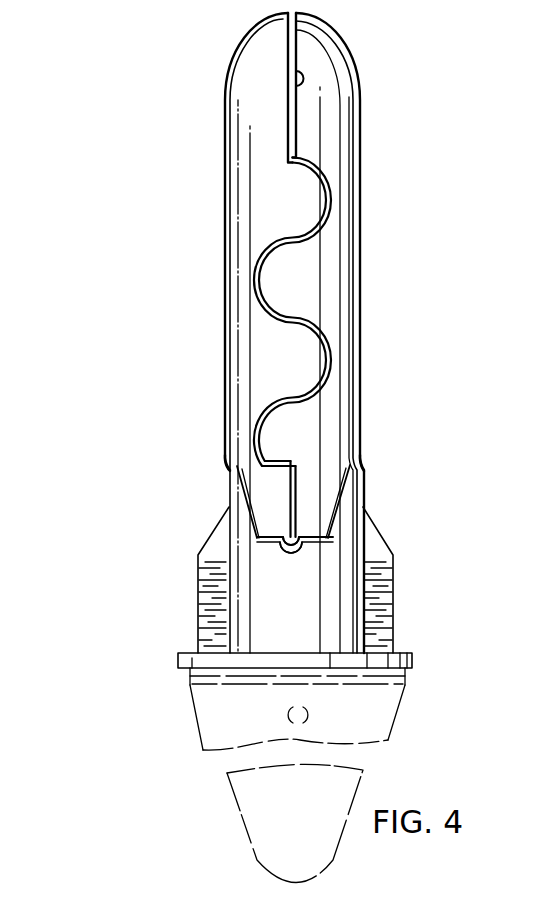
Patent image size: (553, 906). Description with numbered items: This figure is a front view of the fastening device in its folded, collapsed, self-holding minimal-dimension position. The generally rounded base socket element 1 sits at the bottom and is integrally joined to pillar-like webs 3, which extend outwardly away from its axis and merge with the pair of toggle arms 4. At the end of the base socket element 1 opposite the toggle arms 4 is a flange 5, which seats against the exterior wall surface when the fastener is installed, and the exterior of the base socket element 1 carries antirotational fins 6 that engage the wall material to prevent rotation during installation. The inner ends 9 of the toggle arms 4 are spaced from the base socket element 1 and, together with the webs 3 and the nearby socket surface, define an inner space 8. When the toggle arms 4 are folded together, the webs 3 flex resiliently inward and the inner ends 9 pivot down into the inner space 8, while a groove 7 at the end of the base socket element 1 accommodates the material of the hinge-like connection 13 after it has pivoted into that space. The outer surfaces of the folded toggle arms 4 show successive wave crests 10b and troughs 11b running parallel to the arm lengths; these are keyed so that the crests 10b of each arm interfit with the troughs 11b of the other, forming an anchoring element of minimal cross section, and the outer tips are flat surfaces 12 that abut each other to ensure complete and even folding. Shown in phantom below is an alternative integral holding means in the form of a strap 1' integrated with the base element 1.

The base socket element 1 is at (295, 375).
The strap 1' is at (322, 709).
The pillar-like webs 3 is at (227, 465).
The toggle arms 4 is at (230, 107).
The flange 5 is at (412, 661).
The antirotational fins 6 is at (213, 583).
The groove 7 is at (291, 553).
The inner space 8 is at (330, 540).
The inner ends of the toggle arms 9 is at (270, 528).
The wave crests 10b is at (303, 188).
The troughs 11b is at (333, 202).
The flat surfaces 12 is at (300, 80).
The hinge-like connection 13 is at (313, 527).